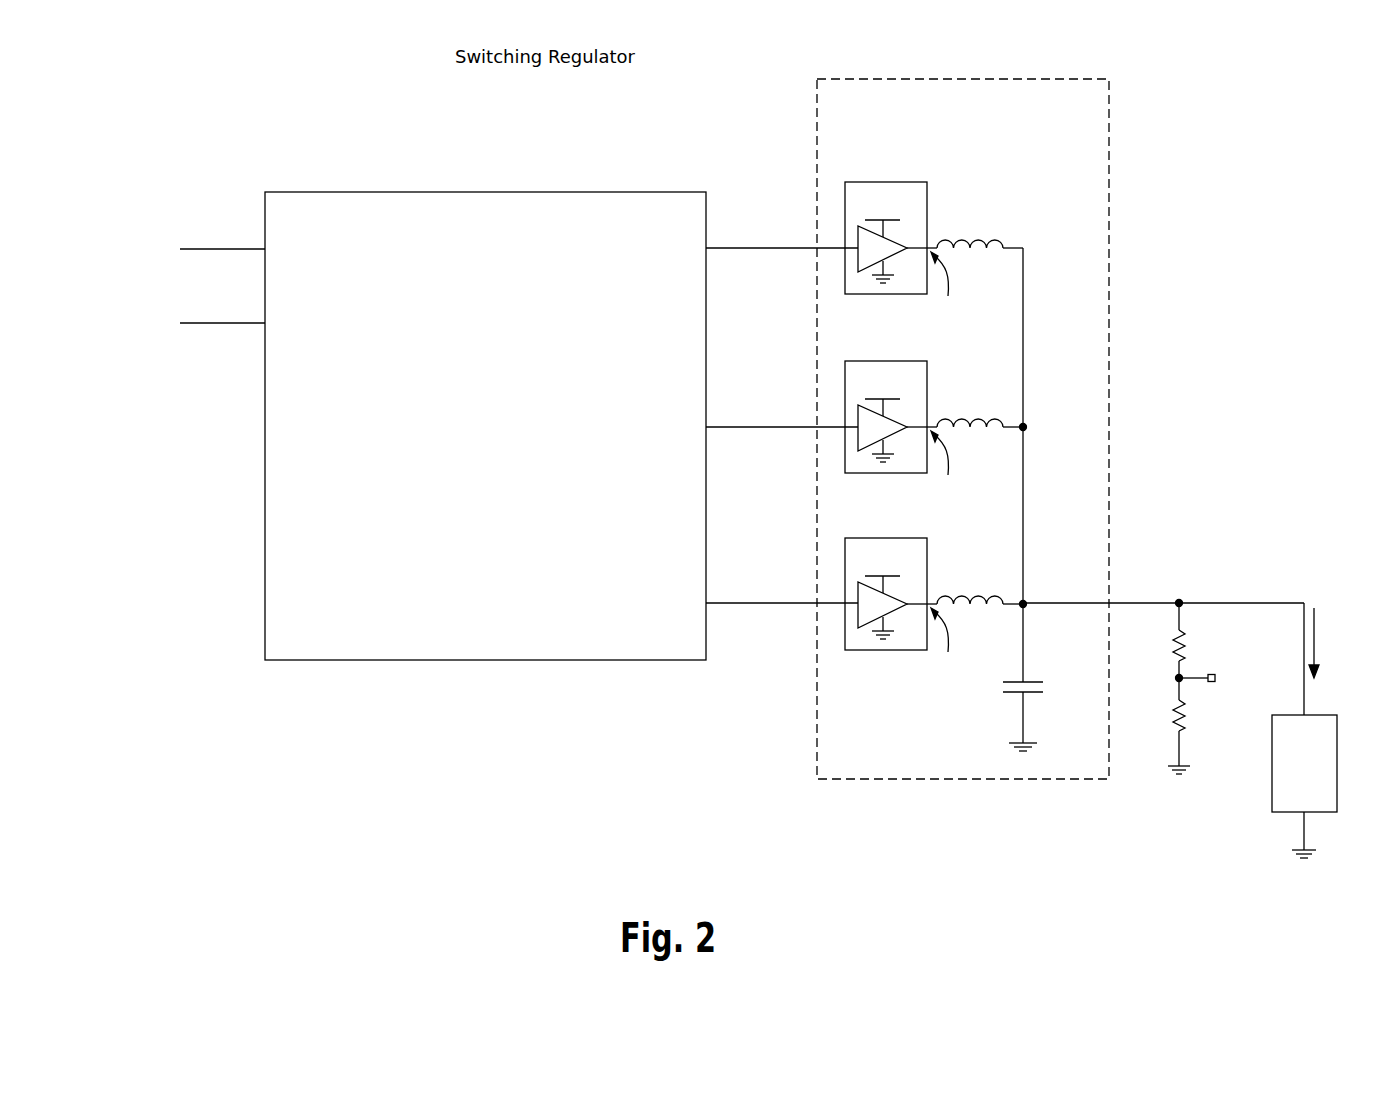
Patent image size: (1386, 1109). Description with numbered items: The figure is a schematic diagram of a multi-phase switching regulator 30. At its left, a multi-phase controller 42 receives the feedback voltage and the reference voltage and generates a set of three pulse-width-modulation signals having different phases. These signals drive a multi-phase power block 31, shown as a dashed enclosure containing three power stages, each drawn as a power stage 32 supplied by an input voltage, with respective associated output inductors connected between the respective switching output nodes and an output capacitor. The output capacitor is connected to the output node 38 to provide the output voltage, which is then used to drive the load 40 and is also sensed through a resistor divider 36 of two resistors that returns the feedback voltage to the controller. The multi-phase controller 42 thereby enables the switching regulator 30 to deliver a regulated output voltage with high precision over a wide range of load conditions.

The multi-phase switching regulator 30 is at (1172, 110).
The multi-phase power block 31 is at (1110, 172).
The power stage 32 is at (899, 219).
The feedback voltage divider 36 is at (1176, 680).
The output node 38 is at (1284, 603).
The load 40 is at (1330, 715).
The multi-phase controller 42 is at (483, 426).